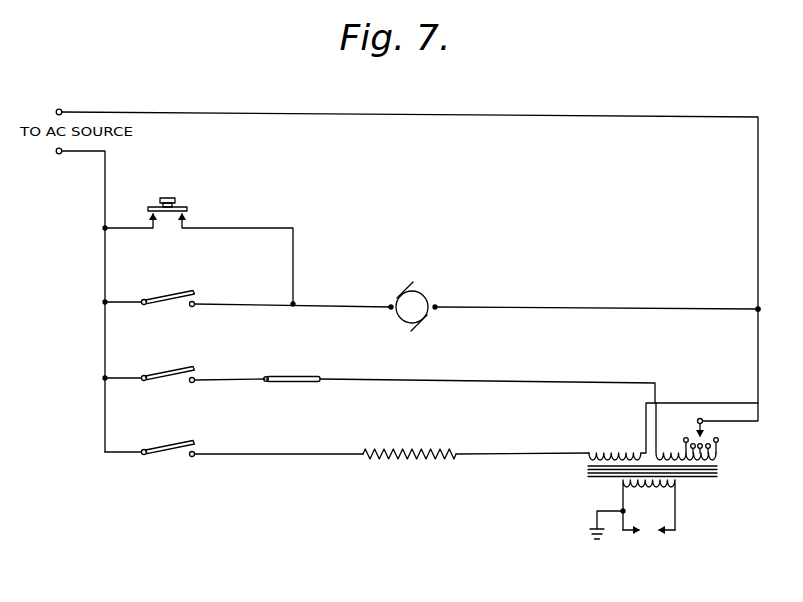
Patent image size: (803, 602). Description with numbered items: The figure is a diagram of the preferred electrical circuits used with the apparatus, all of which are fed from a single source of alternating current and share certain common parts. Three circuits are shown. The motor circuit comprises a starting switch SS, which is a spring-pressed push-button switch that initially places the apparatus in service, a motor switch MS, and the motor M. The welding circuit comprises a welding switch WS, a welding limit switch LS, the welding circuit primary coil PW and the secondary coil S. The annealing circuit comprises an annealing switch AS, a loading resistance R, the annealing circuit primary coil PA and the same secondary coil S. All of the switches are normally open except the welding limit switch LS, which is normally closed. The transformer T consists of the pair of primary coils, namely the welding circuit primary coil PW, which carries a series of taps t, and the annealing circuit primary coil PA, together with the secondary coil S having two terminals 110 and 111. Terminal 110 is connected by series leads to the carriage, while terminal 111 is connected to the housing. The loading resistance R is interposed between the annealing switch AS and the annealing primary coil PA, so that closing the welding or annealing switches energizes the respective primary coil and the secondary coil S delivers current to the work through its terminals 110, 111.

The starting switch SS is at (199, 239).
The motor switch MS is at (150, 309).
The welding switch WS is at (150, 385).
The annealing switch AS is at (150, 459).
The welding limit switch LS is at (292, 392).
The motor M is at (421, 297).
The loading resistance R is at (403, 462).
The transformer T is at (602, 475).
The annealing circuit primary coil PA is at (616, 450).
The welding circuit primary coil PW is at (716, 457).
The taps t is at (685, 438).
The secondary coil S is at (649, 489).
The terminal 111 is at (629, 534).
The terminal 110 is at (660, 534).